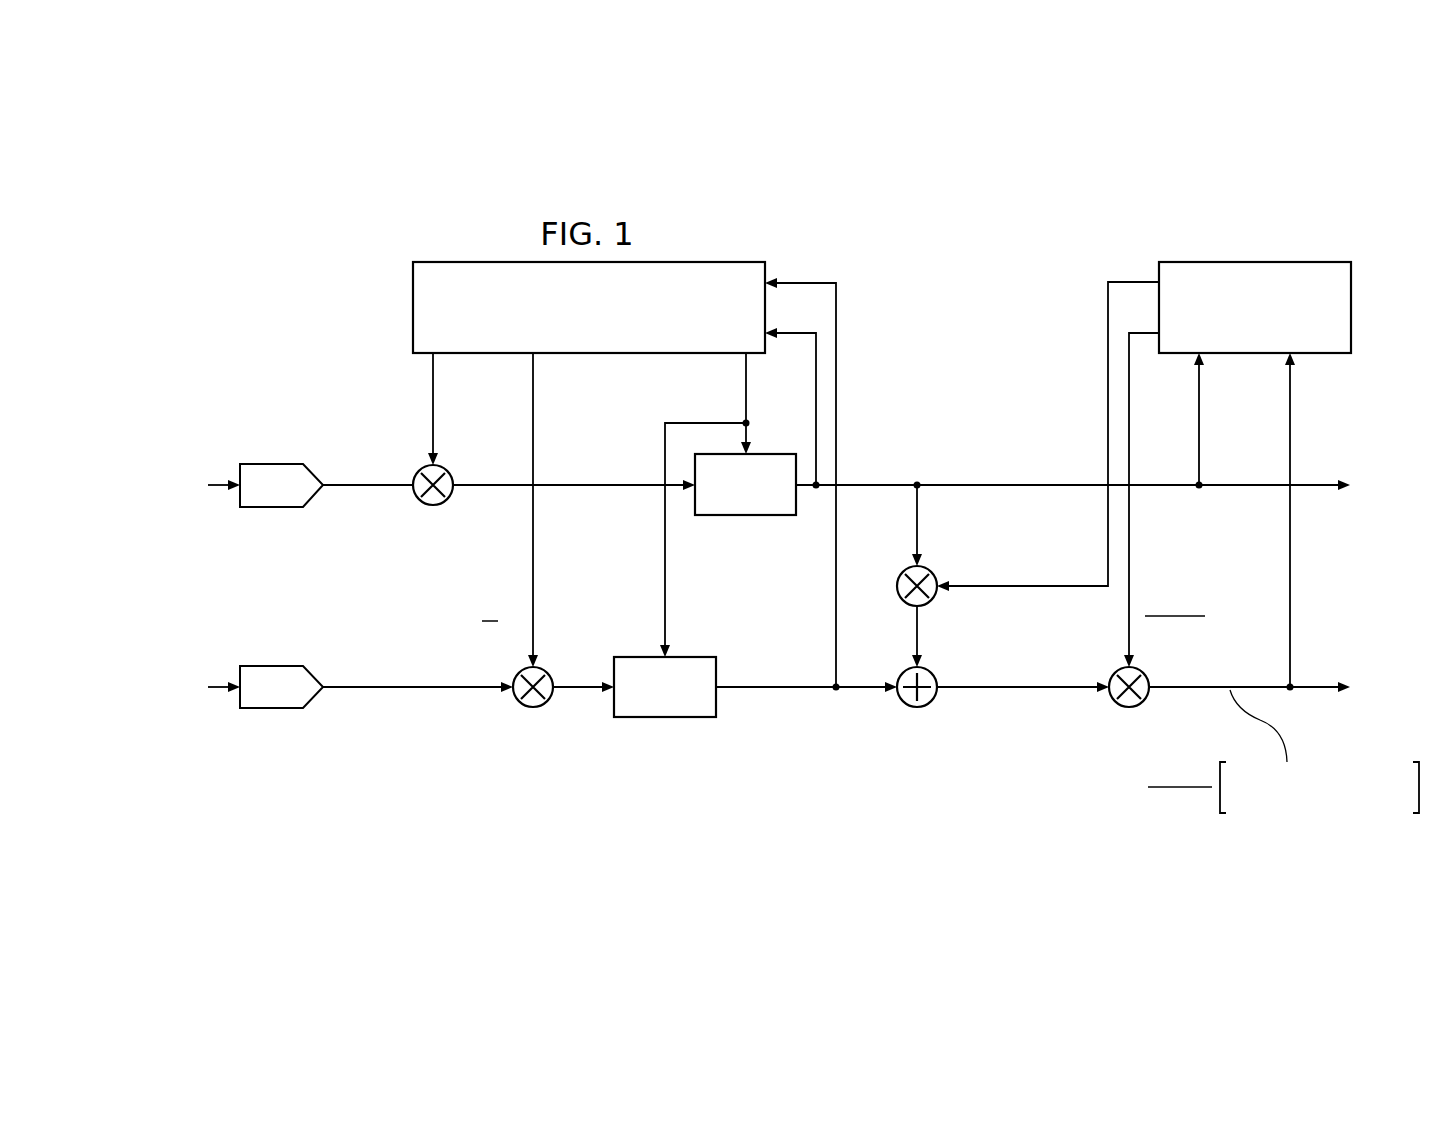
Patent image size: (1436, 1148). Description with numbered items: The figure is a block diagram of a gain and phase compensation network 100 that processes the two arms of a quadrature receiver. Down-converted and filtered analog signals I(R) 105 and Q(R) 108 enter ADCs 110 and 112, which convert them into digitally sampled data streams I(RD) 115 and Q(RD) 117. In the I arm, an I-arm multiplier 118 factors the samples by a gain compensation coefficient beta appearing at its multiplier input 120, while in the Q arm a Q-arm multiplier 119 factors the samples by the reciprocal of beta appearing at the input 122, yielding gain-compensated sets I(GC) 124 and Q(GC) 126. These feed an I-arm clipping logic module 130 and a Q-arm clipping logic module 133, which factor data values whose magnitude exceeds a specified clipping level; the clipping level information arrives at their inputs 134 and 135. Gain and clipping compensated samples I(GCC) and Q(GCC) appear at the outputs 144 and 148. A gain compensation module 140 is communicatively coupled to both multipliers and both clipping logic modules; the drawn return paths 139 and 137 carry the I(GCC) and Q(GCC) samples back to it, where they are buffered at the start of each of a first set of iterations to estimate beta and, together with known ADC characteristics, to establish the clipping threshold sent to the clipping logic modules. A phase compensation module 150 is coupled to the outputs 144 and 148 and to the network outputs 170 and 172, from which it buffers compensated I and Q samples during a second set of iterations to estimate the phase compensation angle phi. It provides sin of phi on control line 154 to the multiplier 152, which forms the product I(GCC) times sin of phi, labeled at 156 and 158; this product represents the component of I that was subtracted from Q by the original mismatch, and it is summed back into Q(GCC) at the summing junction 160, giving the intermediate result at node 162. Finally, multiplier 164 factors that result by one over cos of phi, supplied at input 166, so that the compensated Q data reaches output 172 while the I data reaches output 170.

The gain and phase compensation network 100 is at (980, 236).
The analog signal I(R) 105 is at (180, 470).
The analog signal Q(R) 108 is at (181, 700).
The ADC 110 is at (272, 463).
The ADC 112 is at (272, 709).
The I-arm data stream I(RD) 115 is at (353, 483).
The Q-arm data stream Q(RD) 117 is at (418, 689).
The I-arm multiplier 118 is at (418, 502).
The Q-arm multiplier 119 is at (520, 704).
The multiplier input 120 is at (432, 400).
The clipping logic module input 122 is at (532, 580).
The gain-compensated I data samples I(GC) 124 is at (493, 483).
The gain-compensated Q data samples Q(GC) 126 is at (582, 689).
The I-arm clipping logic module 130 is at (742, 517).
The Q-arm clipping logic module 133 is at (657, 718).
The clipping logic module input 134 is at (744, 391).
The clipping logic module input 135 is at (664, 577).
The Q feedback line 137 is at (836, 581).
The I feedback line 139 is at (794, 280).
The gain compensation module 140 is at (571, 338).
The clipping logic module output 144 is at (1012, 484).
The clipping logic module output 148 is at (868, 690).
The phase compensation module 150 is at (1253, 262).
The multiplier 152 is at (932, 572).
The control line 154 is at (1022, 584).
The I(GCC) sin(phi) signal line 156 is at (916, 634).
The I(GCC) sin(phi) signal 158 is at (1048, 634).
The summing junction 160 is at (935, 702).
The node 162 is at (1022, 690).
The multiplier 164 is at (1146, 700).
The input 166 is at (1130, 566).
The compensation network output 170 is at (1308, 483).
The compensation network output 172 is at (1320, 691).